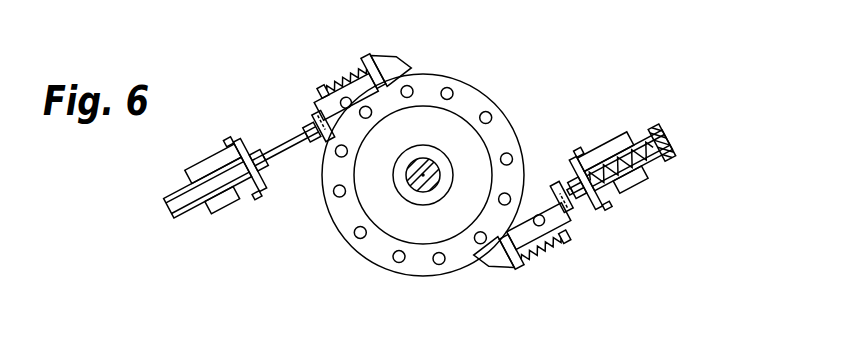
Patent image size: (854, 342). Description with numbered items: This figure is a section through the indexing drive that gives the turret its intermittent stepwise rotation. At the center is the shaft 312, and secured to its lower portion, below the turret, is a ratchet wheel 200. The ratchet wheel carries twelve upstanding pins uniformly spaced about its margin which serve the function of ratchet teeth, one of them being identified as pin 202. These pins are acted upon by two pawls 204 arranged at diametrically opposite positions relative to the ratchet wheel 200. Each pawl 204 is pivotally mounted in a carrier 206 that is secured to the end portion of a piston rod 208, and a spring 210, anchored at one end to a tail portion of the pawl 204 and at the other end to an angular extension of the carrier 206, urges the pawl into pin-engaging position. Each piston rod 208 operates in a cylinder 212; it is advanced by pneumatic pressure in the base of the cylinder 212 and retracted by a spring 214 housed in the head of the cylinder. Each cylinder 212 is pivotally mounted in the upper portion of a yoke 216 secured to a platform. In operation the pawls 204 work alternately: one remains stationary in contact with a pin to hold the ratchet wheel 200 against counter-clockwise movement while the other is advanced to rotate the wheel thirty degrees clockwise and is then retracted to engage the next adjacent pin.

The ratchet wheel 200 is at (452, 74).
The pin 202 is at (510, 146).
The pawl 204 is at (397, 58).
The carrier 206 is at (312, 108).
The piston rod 208 is at (281, 145).
The spring 210 is at (337, 80).
The cylinder 212 is at (170, 206).
The spring 214 is at (635, 142).
The yoke 216 is at (237, 212).
The shaft 312 is at (424, 176).